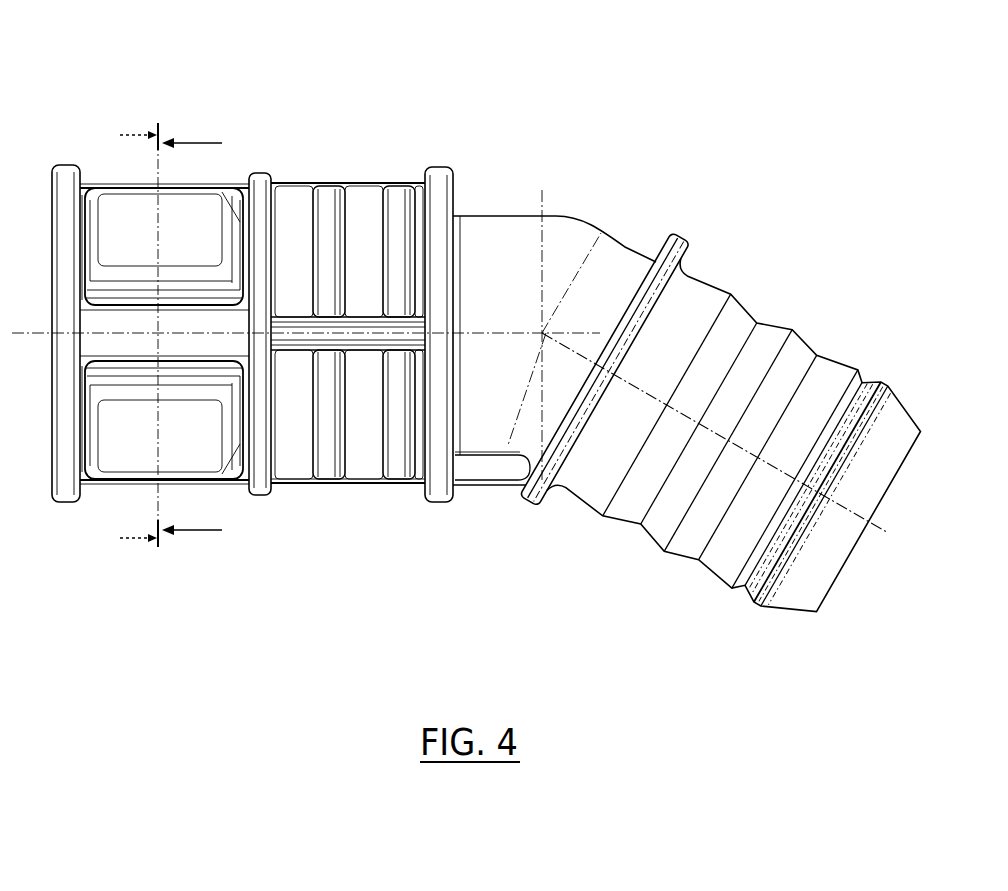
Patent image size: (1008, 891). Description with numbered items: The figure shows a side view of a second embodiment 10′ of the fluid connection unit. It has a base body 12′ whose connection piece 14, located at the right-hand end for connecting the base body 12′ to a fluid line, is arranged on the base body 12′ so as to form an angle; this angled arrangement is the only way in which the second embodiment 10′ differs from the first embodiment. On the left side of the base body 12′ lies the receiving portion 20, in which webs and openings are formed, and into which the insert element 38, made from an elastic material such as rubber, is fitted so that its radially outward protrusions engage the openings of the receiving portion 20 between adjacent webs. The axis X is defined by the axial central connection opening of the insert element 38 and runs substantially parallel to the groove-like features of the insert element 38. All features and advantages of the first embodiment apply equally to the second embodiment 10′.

The fluid connection unit (second embodiment) 10′ is at (661, 94).
The receiving portion 20 is at (110, 173).
The insert element 38 is at (205, 203).
The base body 12′ is at (436, 187).
The connection piece 14 is at (762, 342).
The axis X is at (350, 333).